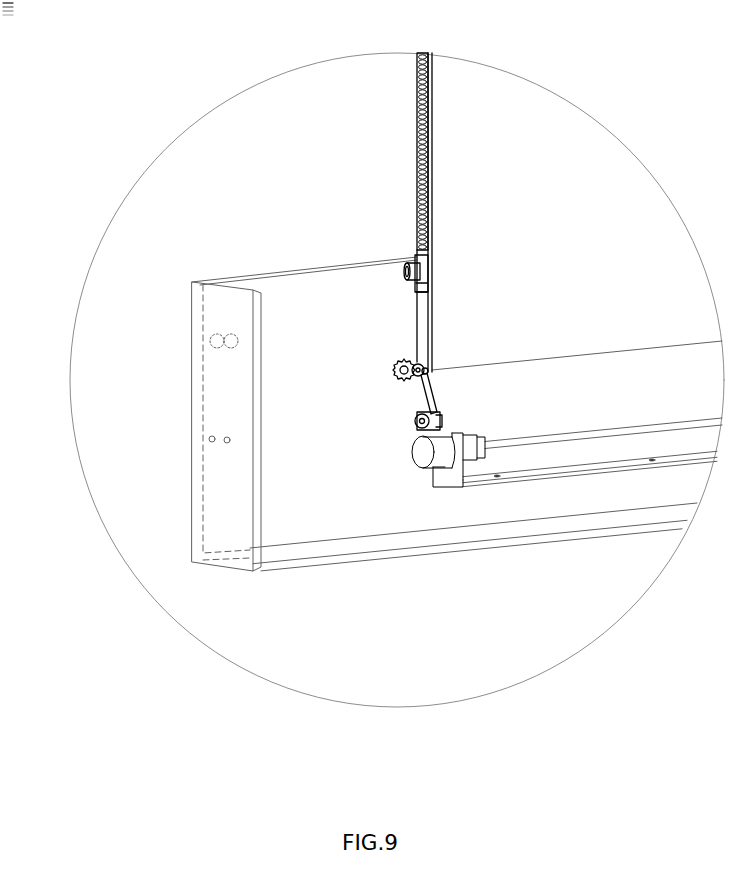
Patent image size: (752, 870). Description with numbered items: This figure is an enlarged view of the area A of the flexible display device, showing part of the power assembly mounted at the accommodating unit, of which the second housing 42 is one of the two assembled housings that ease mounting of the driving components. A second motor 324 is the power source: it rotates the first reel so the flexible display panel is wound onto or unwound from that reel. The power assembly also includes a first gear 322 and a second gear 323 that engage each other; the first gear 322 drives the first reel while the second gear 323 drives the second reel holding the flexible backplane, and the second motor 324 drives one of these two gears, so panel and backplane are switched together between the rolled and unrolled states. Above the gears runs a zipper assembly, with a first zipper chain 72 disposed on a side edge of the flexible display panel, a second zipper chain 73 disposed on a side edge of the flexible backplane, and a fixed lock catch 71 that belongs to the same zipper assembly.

The area A is at (233, 95).
The second housing 42 is at (357, 508).
The fixed lock catch 71 is at (432, 260).
The first zipper chain 72 is at (415, 77).
The second zipper chain 73 is at (433, 108).
The first gear 322 is at (403, 362).
The second gear 323 is at (422, 374).
The second motor 324 is at (413, 425).